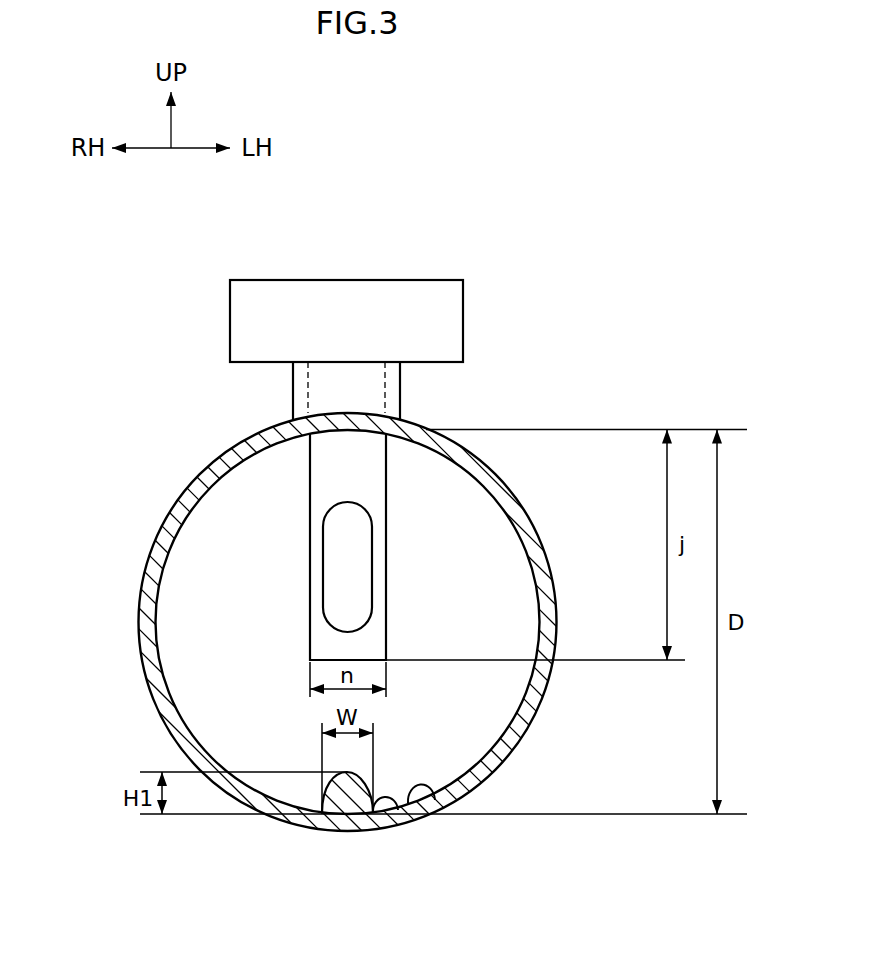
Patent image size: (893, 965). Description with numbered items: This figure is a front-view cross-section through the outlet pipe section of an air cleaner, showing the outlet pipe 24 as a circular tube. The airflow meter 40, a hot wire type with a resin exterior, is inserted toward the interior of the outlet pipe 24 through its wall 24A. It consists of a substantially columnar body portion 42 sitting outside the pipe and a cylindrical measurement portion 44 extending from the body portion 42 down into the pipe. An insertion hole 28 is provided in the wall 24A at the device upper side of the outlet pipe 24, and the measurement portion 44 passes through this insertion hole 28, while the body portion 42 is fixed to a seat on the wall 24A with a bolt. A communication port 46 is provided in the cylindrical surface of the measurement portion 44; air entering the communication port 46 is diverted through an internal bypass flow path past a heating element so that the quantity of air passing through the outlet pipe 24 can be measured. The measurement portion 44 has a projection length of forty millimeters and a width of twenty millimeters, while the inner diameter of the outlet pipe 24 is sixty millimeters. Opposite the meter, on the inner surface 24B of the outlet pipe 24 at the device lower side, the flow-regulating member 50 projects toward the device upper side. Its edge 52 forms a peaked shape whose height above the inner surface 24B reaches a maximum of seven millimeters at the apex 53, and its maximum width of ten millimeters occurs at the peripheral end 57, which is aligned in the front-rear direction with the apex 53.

The airflow meter 40 is at (338, 279).
The body portion 42 is at (415, 290).
The insertion hole 28 is at (386, 392).
The outlet pipe 24 is at (384, 657).
The wall 24A is at (201, 489).
The inner surface 24B is at (431, 803).
The measurement portion 44 is at (377, 483).
The communication port 46 is at (370, 584).
The flow-regulating member 50 is at (240, 768).
The edge 52 is at (210, 769).
The apex 53 is at (347, 771).
The peripheral end 57 is at (393, 812).